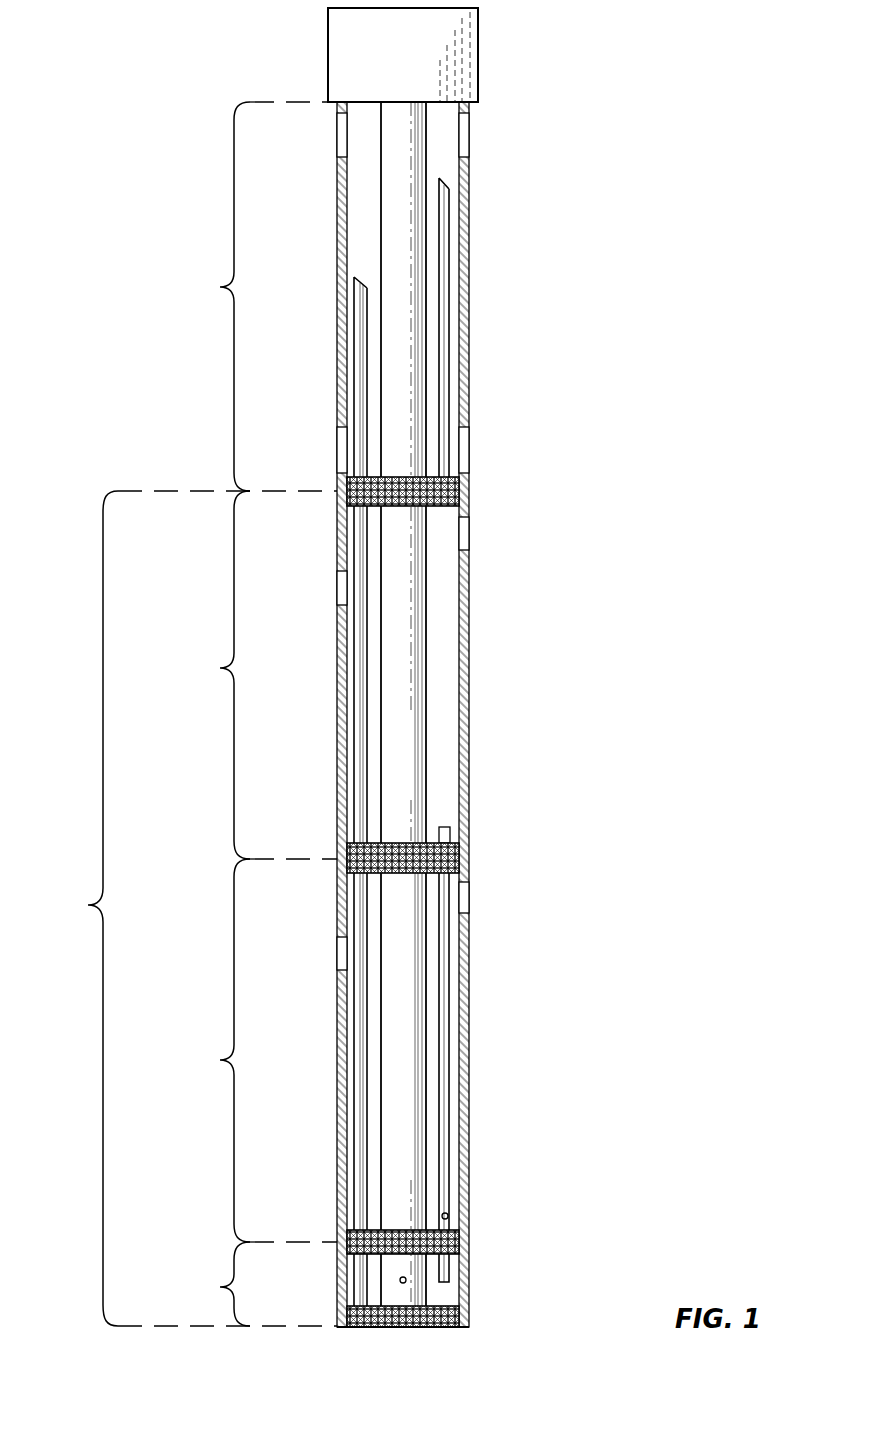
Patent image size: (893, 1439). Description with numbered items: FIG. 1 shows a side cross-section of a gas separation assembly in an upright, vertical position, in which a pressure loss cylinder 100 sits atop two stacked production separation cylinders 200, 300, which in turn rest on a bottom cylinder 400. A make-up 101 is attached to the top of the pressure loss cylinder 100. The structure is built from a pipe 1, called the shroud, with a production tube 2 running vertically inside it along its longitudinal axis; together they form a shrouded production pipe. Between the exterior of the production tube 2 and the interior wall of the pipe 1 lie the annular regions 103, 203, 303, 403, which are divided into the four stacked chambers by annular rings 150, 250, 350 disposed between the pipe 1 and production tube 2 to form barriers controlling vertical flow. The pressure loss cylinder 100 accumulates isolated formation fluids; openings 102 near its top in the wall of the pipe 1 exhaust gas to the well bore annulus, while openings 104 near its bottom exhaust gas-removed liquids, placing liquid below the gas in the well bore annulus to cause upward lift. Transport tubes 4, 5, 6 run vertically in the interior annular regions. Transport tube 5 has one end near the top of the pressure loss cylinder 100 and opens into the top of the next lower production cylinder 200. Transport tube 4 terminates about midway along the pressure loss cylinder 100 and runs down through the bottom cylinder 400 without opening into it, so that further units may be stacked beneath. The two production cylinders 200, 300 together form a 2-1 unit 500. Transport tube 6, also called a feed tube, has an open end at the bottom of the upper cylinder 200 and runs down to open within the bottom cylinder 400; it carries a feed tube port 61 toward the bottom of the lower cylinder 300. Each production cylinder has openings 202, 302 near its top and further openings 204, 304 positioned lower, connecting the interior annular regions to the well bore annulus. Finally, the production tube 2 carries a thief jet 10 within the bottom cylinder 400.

The pipe 1 is at (470, 382).
The production tube 2 is at (412, 762).
The transport tube 4 is at (358, 378).
The transport tube 5 is at (448, 315).
The transport tube 6 is at (448, 1038).
The orifice or opening 10 is at (400, 1281).
The hole or orifice or opening 61 is at (448, 1214).
The pressure loss cylinder 100 is at (210, 296).
The make-up 101 is at (463, 44).
The openings 102 is at (338, 136).
The annular region 103 is at (442, 120).
The openings 104 is at (338, 443).
The annular ring 150 is at (355, 497).
The production cylinder 200 is at (210, 675).
The openings 202 is at (465, 530).
The annular region 203 is at (443, 660).
The openings 204 is at (338, 588).
The annular ring 250 is at (355, 861).
The production cylinder 300 is at (210, 1050).
The openings 302 is at (465, 897).
The annular region 303 is at (436, 1104).
The openings 304 is at (338, 953).
The annular ring 350 is at (355, 1242).
The bottom cylinder 400 is at (210, 1284).
The annular region 403 is at (444, 1301).
The 2-1 unit 500 is at (74, 908).